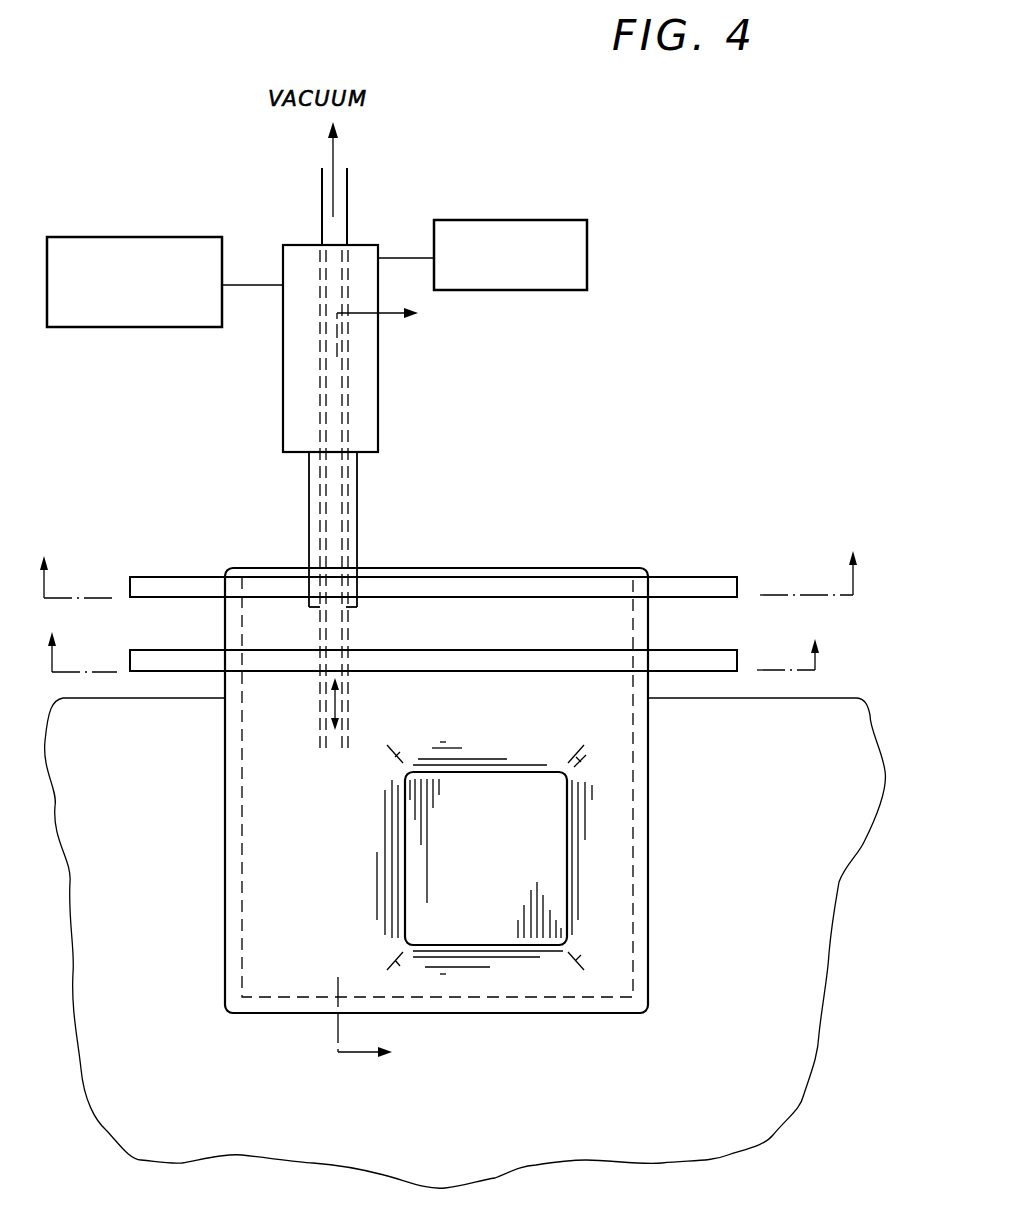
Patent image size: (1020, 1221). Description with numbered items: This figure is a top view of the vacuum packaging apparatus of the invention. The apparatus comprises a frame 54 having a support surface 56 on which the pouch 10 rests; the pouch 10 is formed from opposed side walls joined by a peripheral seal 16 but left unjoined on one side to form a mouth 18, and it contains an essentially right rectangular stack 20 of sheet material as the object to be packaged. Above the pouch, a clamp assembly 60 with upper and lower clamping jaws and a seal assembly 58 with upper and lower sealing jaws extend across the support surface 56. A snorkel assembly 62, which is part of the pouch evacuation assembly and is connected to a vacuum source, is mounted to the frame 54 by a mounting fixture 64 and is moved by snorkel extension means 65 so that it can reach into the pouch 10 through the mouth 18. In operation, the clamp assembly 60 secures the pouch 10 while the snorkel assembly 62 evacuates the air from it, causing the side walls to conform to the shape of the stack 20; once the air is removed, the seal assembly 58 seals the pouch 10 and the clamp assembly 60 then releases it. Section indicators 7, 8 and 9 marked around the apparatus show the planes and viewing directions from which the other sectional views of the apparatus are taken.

The pouch 10 is at (225, 965).
The peripheral seal 16 is at (648, 773).
The mouth 18 is at (552, 568).
The stack of sheet material 20 is at (548, 872).
The frame 54 is at (866, 840).
The support surface 56 is at (858, 700).
The seal assembly 58 is at (718, 650).
The clamp assembly 60 is at (706, 577).
The snorkel assembly 62 is at (455, 366).
The mounting fixture 64 is at (505, 220).
The snorkel extension means 65 is at (140, 237).
The section line 7 is at (450, 559).
The section line 8 is at (440, 640).
The section line 9 is at (387, 684).